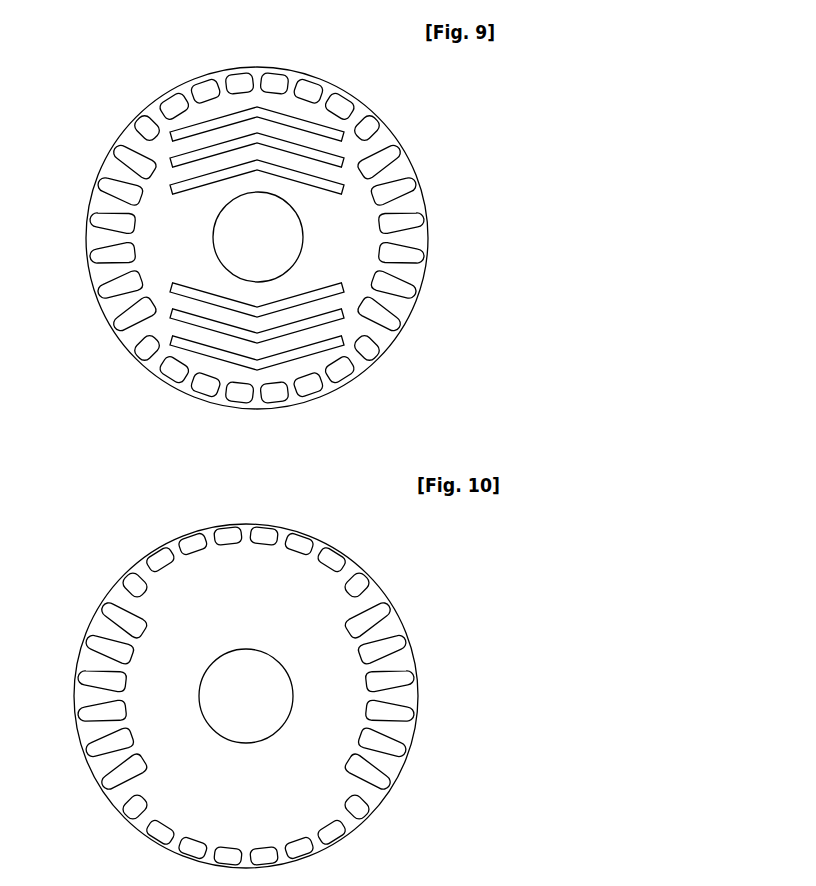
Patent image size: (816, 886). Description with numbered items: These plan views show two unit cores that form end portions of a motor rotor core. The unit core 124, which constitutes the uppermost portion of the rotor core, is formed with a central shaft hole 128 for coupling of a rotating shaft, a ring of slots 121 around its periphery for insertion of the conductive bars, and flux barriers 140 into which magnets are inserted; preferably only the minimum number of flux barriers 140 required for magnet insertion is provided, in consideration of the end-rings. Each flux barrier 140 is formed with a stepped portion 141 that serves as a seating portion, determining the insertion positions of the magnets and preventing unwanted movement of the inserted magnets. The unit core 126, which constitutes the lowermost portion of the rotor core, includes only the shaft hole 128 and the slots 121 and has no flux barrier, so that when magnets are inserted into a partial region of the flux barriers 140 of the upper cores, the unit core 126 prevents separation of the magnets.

In FIG. 9, the unit core 124 is at (441, 148).
In FIG. 9, the slots 121 is at (415, 215).
In FIG. 10, the slots 121 is at (405, 673).
In FIG. 9, the shaft hole 128 is at (216, 222).
In FIG. 10, the shaft hole 128 is at (204, 683).
In FIG. 9, the flux barrier 140 is at (333, 288).
In FIG. 9, the stepped portion 141 is at (257, 370).
In FIG. 10, the unit core 126 is at (431, 601).